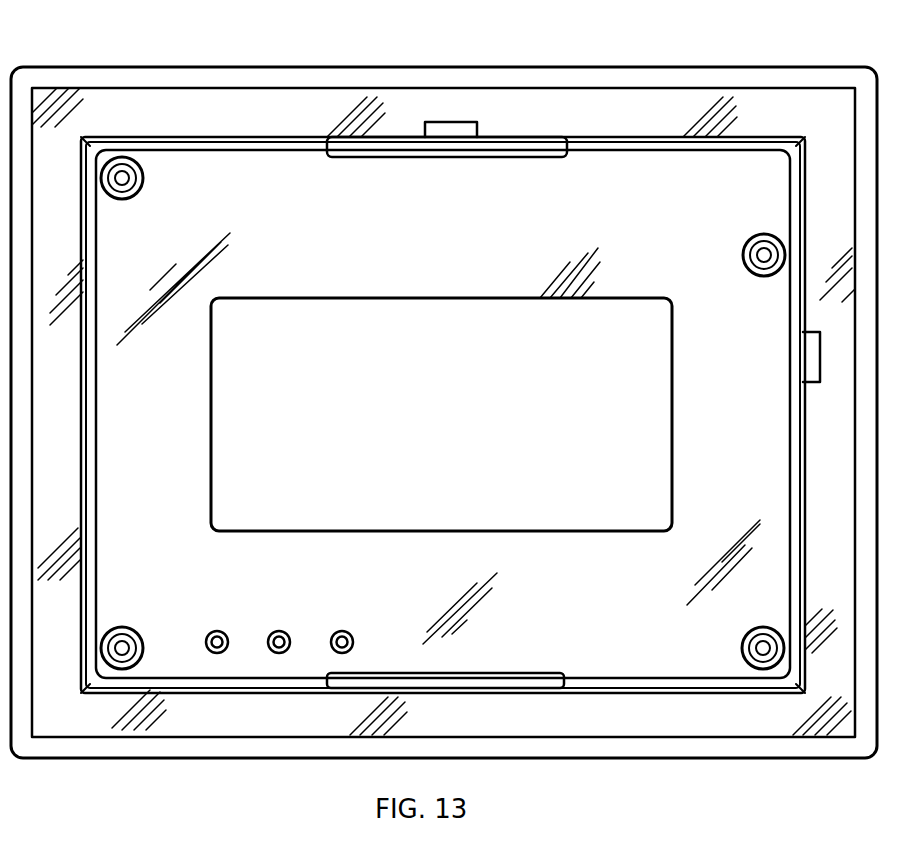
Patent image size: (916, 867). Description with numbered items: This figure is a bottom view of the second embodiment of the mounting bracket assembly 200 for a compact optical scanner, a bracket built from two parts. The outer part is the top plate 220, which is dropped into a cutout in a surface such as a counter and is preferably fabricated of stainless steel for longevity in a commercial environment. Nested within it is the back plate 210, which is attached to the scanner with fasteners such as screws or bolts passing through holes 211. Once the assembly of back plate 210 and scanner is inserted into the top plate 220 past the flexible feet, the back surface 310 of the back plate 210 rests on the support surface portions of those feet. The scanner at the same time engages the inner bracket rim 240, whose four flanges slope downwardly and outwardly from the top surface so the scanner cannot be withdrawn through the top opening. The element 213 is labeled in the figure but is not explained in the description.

The display assembly housing 200 is at (828, 67).
The housing wall 220 is at (443, 67).
The mounting plate with opening 210 is at (212, 412).
The mounting screws 211 is at (144, 183).
The mounting holes 240 is at (338, 630).
The bevelled frame 310 is at (588, 657).
The side tab 213 is at (859, 393).